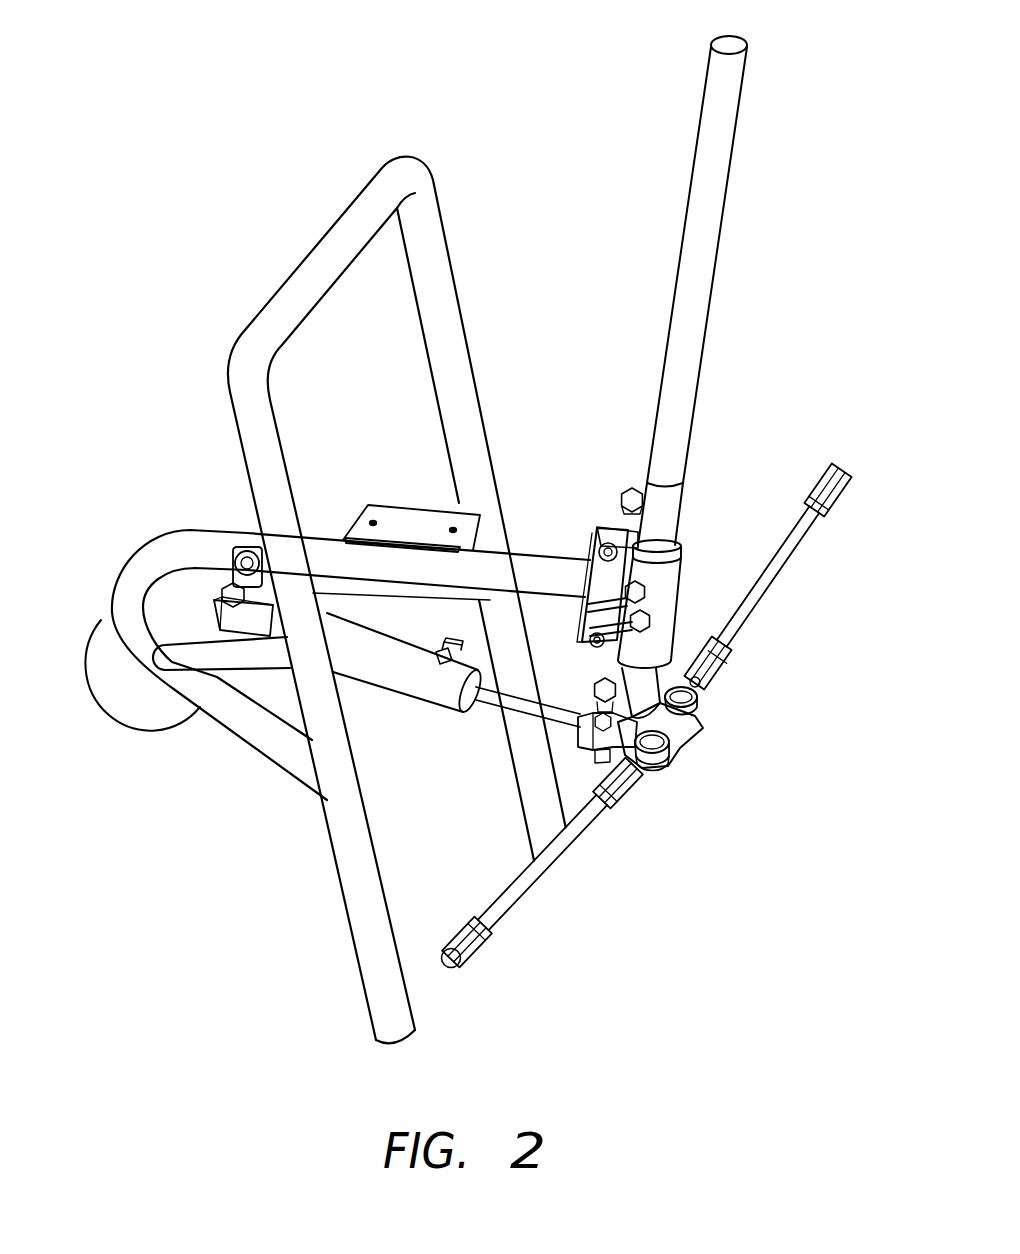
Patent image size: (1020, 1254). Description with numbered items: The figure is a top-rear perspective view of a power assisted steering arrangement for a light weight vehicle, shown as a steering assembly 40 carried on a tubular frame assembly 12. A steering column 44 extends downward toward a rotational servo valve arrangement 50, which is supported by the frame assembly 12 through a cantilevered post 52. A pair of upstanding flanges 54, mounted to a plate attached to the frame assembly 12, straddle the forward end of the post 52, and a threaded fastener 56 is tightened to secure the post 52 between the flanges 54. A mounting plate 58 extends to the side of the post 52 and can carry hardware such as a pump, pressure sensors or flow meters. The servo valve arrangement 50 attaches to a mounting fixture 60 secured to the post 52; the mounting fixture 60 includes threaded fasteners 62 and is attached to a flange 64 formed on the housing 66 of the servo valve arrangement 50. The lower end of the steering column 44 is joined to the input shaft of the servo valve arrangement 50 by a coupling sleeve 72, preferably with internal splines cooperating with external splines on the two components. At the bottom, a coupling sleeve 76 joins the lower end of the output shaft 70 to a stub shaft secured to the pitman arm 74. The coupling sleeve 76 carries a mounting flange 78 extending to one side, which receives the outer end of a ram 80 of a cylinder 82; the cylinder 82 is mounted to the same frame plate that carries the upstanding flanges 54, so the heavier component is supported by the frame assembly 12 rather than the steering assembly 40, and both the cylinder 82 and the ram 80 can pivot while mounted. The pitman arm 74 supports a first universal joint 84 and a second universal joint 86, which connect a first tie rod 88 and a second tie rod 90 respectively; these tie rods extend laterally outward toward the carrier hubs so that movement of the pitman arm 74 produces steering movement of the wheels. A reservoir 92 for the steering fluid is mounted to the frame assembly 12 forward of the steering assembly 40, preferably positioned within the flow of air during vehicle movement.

The frame assembly 12 is at (268, 226).
The steering assembly 40 is at (726, 422).
The steering column 44 is at (710, 203).
The servo valve arrangement 50 is at (705, 540).
The cantilevered post 52 is at (510, 577).
The upstanding flanges 54 is at (202, 543).
The threaded fastener 56 is at (243, 562).
The mounting plate 58 is at (395, 520).
The mounting fixture 60 is at (584, 553).
The threaded fasteners 62 is at (600, 532).
The flange 64 is at (622, 526).
The housing 66 is at (678, 543).
The output shaft 70 is at (644, 760).
The coupling sleeve 72 is at (672, 498).
The pitman arm 74 is at (697, 745).
The coupling sleeve 76 is at (690, 660).
The mounting flange 78 is at (596, 704).
The ram 80 is at (485, 725).
The cylinder 82 is at (394, 660).
The first universal joint 84 is at (702, 698).
The second universal joint 86 is at (667, 762).
The first tie rod 88 is at (773, 567).
The second tie rod 90 is at (535, 872).
The reservoir 92 is at (97, 667).